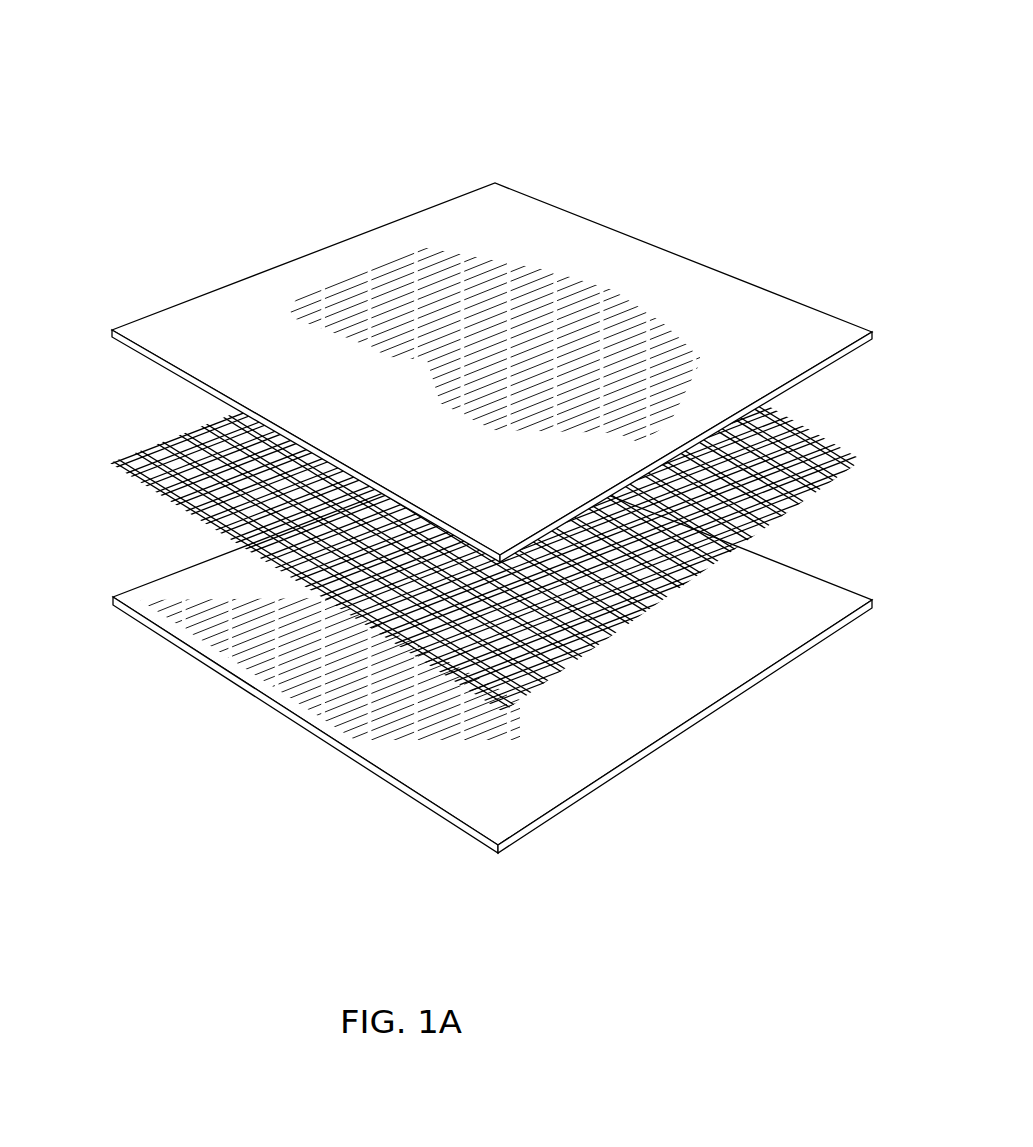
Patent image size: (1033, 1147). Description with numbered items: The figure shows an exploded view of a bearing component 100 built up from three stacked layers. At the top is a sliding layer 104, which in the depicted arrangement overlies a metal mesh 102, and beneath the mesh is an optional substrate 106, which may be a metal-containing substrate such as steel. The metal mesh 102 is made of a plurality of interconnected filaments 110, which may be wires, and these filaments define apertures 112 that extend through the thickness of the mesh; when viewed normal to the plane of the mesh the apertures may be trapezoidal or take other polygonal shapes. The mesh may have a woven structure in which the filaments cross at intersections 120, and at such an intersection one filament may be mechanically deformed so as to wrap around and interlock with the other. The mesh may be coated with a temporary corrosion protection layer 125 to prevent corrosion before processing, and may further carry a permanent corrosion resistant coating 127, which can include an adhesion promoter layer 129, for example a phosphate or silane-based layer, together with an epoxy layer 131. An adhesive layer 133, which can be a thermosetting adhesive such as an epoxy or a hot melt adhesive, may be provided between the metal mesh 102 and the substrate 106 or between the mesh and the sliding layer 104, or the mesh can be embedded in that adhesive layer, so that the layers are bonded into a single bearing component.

The bearing component 100 is at (171, 64).
The metal mesh 102 is at (112, 462).
The sliding layer 104 is at (112, 332).
The substrate 106 is at (112, 598).
The filaments 110 is at (837, 447).
The aperture 112 is at (175, 430).
The intersections 120 is at (112, 467).
The temporary corrosion protection layer 125 is at (797, 423).
The permanent corrosion resistant coating 127 is at (853, 468).
The adhesion promoter layer 129 is at (382, 628).
The epoxy layer 131 is at (437, 662).
The adhesive layer 133 is at (782, 520).